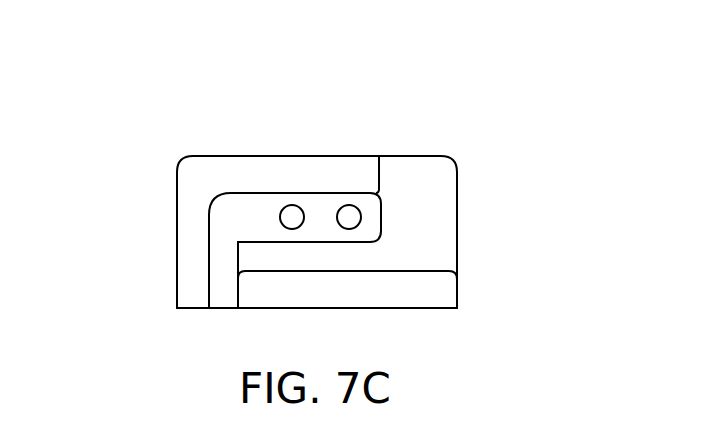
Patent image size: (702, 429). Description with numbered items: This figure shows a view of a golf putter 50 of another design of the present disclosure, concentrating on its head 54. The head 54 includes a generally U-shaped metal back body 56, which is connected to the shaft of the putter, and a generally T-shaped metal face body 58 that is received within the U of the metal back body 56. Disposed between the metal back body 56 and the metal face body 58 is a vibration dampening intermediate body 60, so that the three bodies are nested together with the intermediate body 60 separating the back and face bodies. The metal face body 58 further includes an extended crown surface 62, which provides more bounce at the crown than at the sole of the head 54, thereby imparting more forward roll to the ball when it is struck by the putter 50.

The golf putter 50 is at (492, 127).
The head 54 is at (166, 177).
The metal back body 56 is at (387, 290).
The metal face body 58 is at (242, 172).
The vibration dampening intermediate body 60 is at (422, 231).
The extended crown surface 62 is at (177, 265).